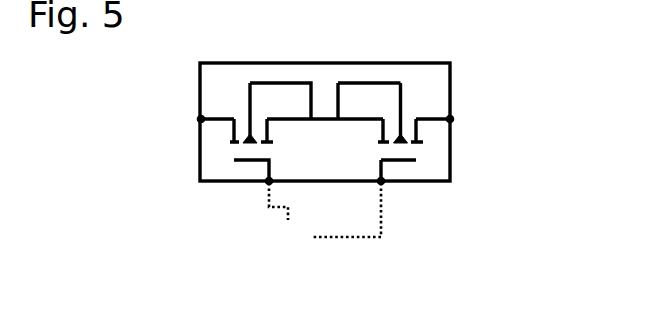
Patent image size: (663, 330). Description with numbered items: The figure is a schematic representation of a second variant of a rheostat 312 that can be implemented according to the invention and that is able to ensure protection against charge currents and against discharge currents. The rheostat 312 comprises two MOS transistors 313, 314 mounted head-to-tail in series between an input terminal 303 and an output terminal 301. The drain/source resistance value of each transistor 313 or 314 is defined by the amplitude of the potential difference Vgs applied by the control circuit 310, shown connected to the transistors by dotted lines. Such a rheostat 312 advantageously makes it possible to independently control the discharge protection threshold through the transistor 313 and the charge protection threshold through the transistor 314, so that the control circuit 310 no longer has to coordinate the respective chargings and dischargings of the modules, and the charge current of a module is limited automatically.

The rheostat 312 is at (325, 63).
The input terminal 303 is at (198, 119).
The output terminal 301 is at (453, 119).
The MOS transistor 313 is at (230, 144).
The MOS transistor 314 is at (422, 144).
The control circuit 310 is at (325, 215).